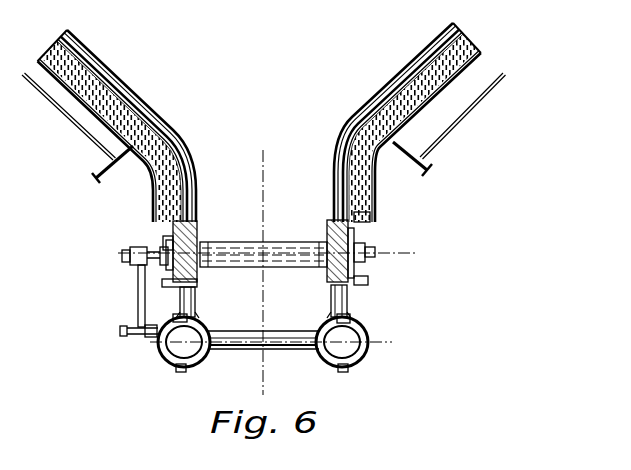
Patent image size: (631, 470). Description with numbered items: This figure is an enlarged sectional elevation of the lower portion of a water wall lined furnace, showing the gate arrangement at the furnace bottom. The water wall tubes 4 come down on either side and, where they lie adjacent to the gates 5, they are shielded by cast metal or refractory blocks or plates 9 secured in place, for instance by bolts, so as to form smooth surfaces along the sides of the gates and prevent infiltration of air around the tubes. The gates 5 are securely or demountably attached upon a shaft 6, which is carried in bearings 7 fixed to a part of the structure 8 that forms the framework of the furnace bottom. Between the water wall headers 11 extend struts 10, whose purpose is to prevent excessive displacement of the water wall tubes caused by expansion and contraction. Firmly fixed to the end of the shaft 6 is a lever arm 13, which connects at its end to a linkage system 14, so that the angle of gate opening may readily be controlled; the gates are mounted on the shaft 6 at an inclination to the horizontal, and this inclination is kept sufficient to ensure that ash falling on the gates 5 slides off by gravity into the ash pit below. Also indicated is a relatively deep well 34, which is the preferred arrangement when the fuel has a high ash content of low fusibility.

The water wall tubes 4 is at (133, 88).
The gates 5 is at (226, 250).
The shaft 6 is at (121, 256).
The bearings 7 is at (172, 236).
The structure forming the framework of the furnace bottom 8 is at (75, 125).
The blocks or plates 9 is at (326, 228).
The struts 10 is at (246, 348).
The water wall headers 11 is at (168, 352).
The lever arm 13 is at (138, 296).
The linkage system 14 is at (127, 332).
The well 34 is at (312, 172).